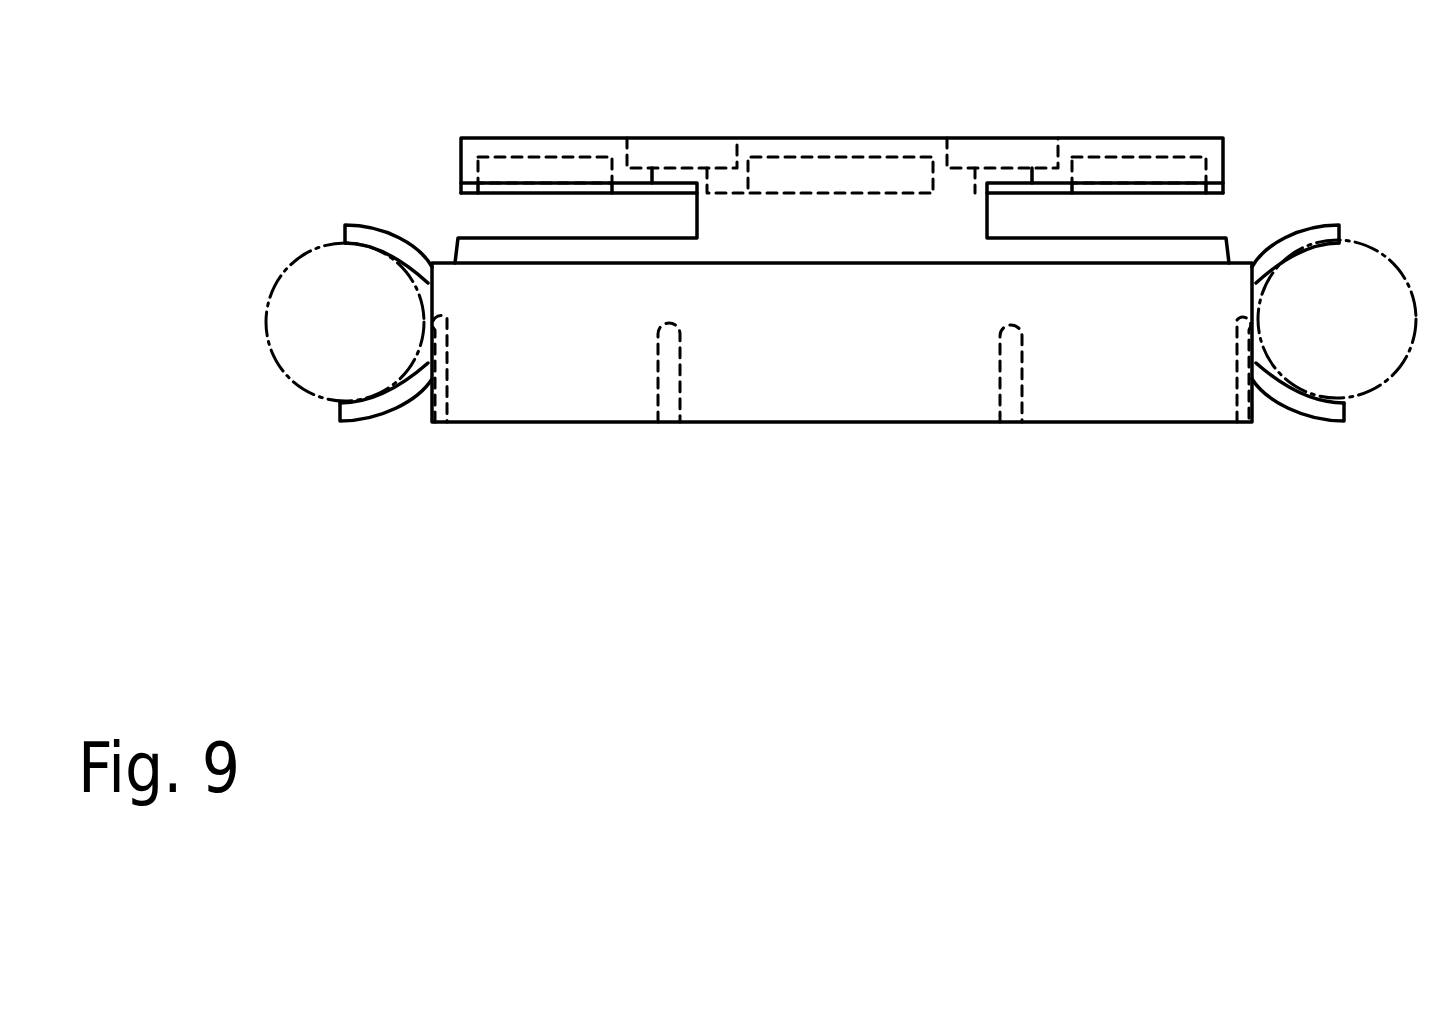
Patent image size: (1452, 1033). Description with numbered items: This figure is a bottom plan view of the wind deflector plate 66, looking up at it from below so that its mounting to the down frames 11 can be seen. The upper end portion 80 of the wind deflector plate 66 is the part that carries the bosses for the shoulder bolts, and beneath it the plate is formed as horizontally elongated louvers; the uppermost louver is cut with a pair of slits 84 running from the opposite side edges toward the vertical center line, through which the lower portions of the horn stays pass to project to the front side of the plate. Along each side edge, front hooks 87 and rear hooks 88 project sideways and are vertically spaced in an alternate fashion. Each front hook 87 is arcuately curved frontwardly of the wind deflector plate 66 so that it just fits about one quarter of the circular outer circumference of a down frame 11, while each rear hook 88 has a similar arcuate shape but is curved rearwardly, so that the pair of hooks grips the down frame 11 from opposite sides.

The down frame 11 is at (286, 374).
The wind deflector plate 66 is at (838, 438).
The upper end portion 80 is at (838, 147).
The slits 84 is at (557, 213).
The front hook 87 is at (371, 225).
The rear hook 88 is at (358, 423).